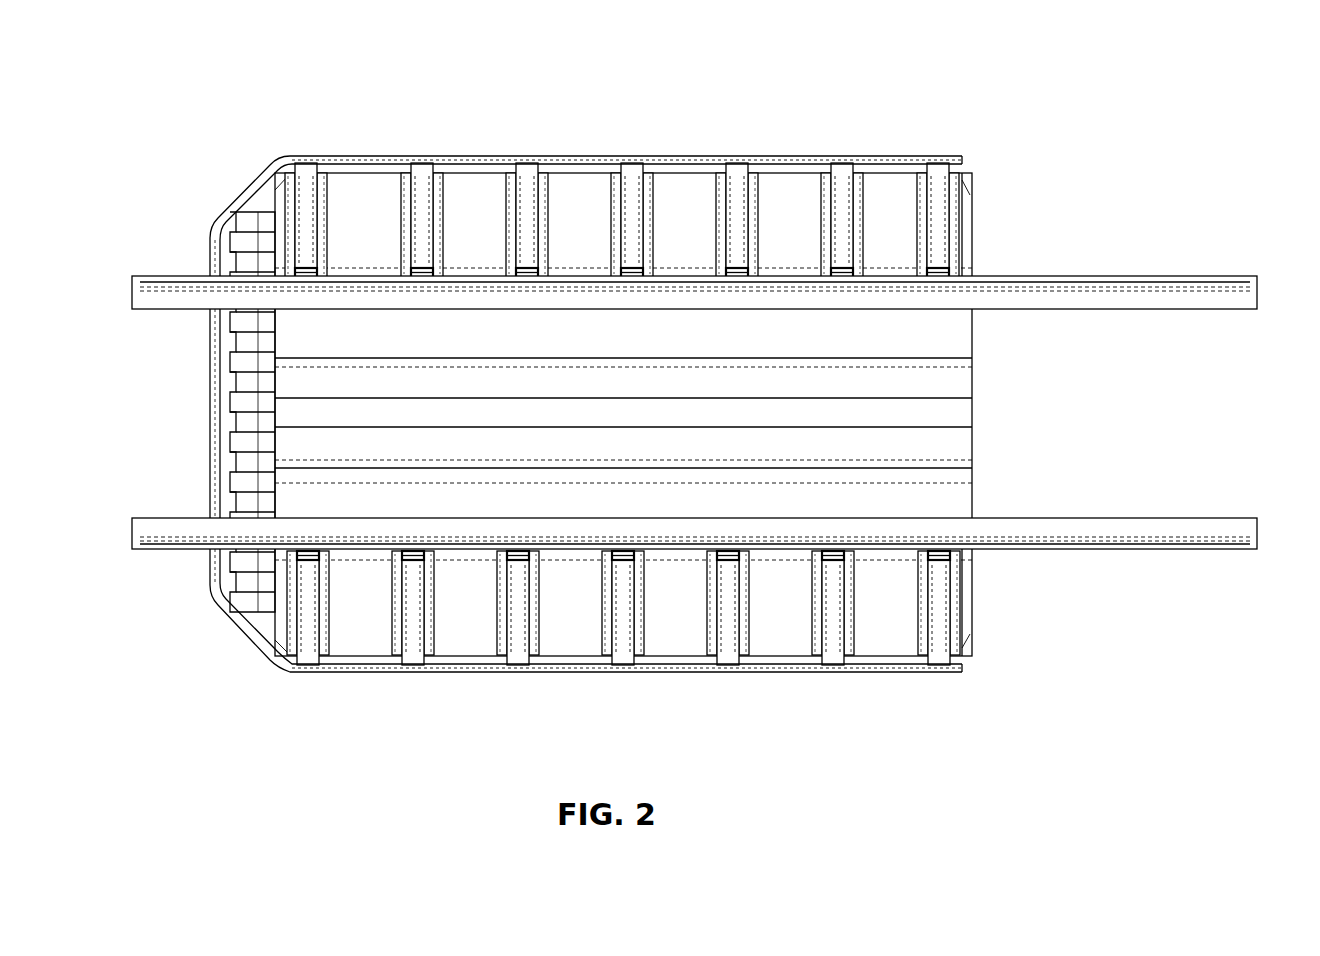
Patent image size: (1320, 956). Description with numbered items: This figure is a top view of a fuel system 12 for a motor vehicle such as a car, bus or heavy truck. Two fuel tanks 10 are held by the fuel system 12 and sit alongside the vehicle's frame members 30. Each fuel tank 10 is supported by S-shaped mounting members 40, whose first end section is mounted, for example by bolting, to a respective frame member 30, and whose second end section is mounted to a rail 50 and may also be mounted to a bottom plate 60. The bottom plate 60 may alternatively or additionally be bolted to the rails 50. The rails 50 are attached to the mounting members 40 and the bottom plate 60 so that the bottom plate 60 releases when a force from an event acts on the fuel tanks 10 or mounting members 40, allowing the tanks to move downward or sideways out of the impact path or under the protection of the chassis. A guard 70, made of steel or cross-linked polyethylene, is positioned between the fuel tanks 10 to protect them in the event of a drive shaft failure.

The fuel tank 10 is at (977, 330).
The fuel system 12 is at (1029, 147).
The frame member 30 is at (1022, 552).
The mounting member 40 is at (632, 150).
The rail 50 is at (602, 686).
The bottom plate 60 is at (250, 622).
The guard 70 is at (985, 412).